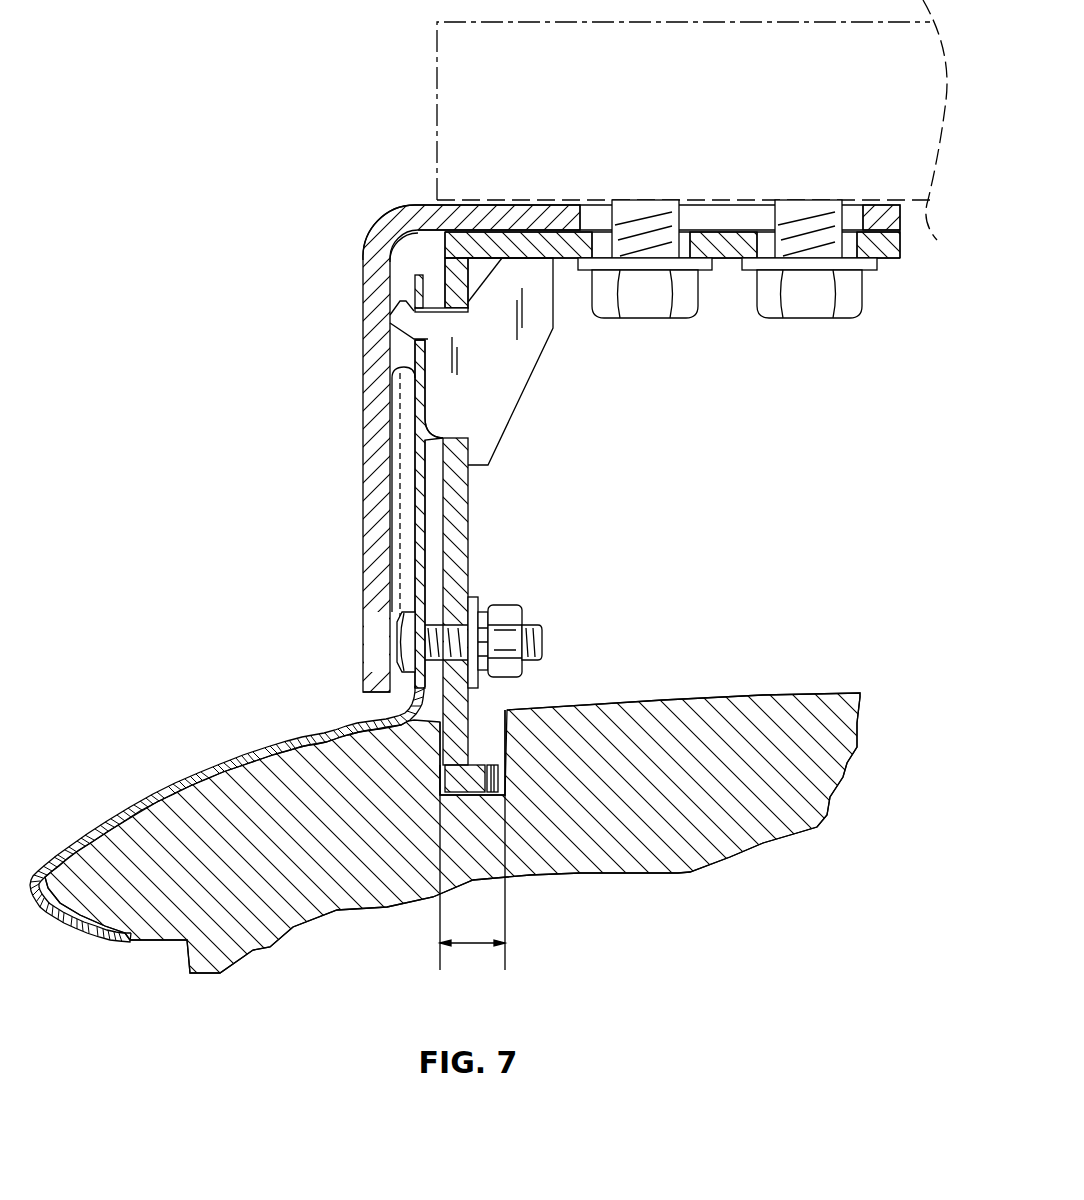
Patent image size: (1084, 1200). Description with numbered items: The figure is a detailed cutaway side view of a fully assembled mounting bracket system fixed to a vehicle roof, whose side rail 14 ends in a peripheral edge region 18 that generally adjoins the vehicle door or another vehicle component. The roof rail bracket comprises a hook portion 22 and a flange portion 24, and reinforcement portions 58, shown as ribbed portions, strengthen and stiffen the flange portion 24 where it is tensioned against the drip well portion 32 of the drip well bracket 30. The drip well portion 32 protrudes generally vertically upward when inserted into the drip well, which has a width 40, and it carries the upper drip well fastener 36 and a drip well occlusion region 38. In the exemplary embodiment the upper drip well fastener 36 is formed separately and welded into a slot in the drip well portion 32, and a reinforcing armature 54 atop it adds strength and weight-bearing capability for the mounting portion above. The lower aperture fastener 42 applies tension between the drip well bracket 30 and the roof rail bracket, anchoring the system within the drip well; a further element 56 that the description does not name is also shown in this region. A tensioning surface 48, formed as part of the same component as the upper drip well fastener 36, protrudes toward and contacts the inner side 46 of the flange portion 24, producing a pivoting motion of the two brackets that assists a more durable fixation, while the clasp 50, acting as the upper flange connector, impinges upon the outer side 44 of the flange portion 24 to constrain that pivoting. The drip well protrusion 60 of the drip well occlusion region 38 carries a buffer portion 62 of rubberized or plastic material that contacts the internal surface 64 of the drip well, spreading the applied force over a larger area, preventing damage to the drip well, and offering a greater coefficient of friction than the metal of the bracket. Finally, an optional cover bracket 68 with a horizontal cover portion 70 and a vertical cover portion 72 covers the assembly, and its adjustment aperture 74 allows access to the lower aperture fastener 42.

The side rail 14 is at (232, 760).
The peripheral edge region 18 is at (83, 883).
The hook portion 22 is at (170, 788).
The flange portion 24 is at (428, 393).
The drip well bracket 30 is at (512, 634).
The drip well portion 32 is at (458, 495).
The upper drip well fastener 36 is at (471, 361).
The drip well occlusion region 38 is at (424, 722).
The width 40 is at (475, 946).
The lower aperture fastener 42 is at (535, 623).
The outer side 44 is at (404, 284).
The inner side 46 is at (437, 461).
The tensioning surface 48 is at (440, 405).
The clasp 50 is at (382, 317).
The reinforcing armature 54 is at (540, 274).
The washer 56 is at (540, 677).
The reinforcement portions 58 is at (405, 492).
The drip well protrusion 60 is at (474, 798).
The buffer portion 62 is at (508, 777).
The internal surface 64 is at (498, 720).
The cover bracket 68 is at (376, 222).
The horizontal cover portion 70 is at (525, 220).
The vertical cover portion 72 is at (372, 360).
The adjustment aperture 74 is at (357, 603).